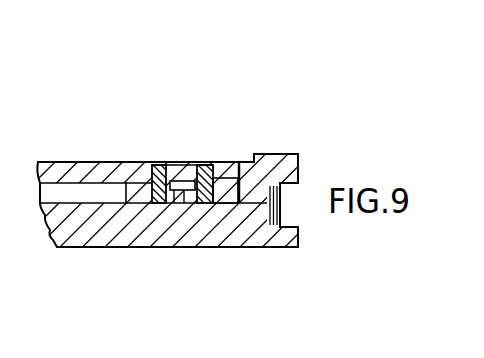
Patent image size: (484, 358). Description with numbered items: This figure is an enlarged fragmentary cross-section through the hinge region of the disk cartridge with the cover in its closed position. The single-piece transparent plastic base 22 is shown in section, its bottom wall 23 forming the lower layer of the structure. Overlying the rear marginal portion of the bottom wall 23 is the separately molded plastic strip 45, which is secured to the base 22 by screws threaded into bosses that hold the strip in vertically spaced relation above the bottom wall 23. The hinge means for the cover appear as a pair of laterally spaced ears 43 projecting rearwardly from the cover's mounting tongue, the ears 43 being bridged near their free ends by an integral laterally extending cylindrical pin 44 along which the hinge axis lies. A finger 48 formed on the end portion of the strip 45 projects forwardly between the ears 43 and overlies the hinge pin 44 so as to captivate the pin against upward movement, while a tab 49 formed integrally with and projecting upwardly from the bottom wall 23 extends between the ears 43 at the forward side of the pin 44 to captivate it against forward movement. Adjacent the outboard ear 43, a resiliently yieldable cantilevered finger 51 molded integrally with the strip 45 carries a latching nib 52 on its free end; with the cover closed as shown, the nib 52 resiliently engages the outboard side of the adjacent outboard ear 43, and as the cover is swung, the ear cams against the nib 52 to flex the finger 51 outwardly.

The base 22 is at (102, 238).
The bottom wall 23 is at (147, 248).
The ears 43 is at (132, 164).
The cylindrical pin 44 is at (191, 166).
The plastic strip 45 is at (76, 164).
The finger 48 is at (180, 167).
The tab 49 is at (186, 191).
The cantilevered finger 51 is at (233, 189).
The latching nib 52 is at (200, 192).